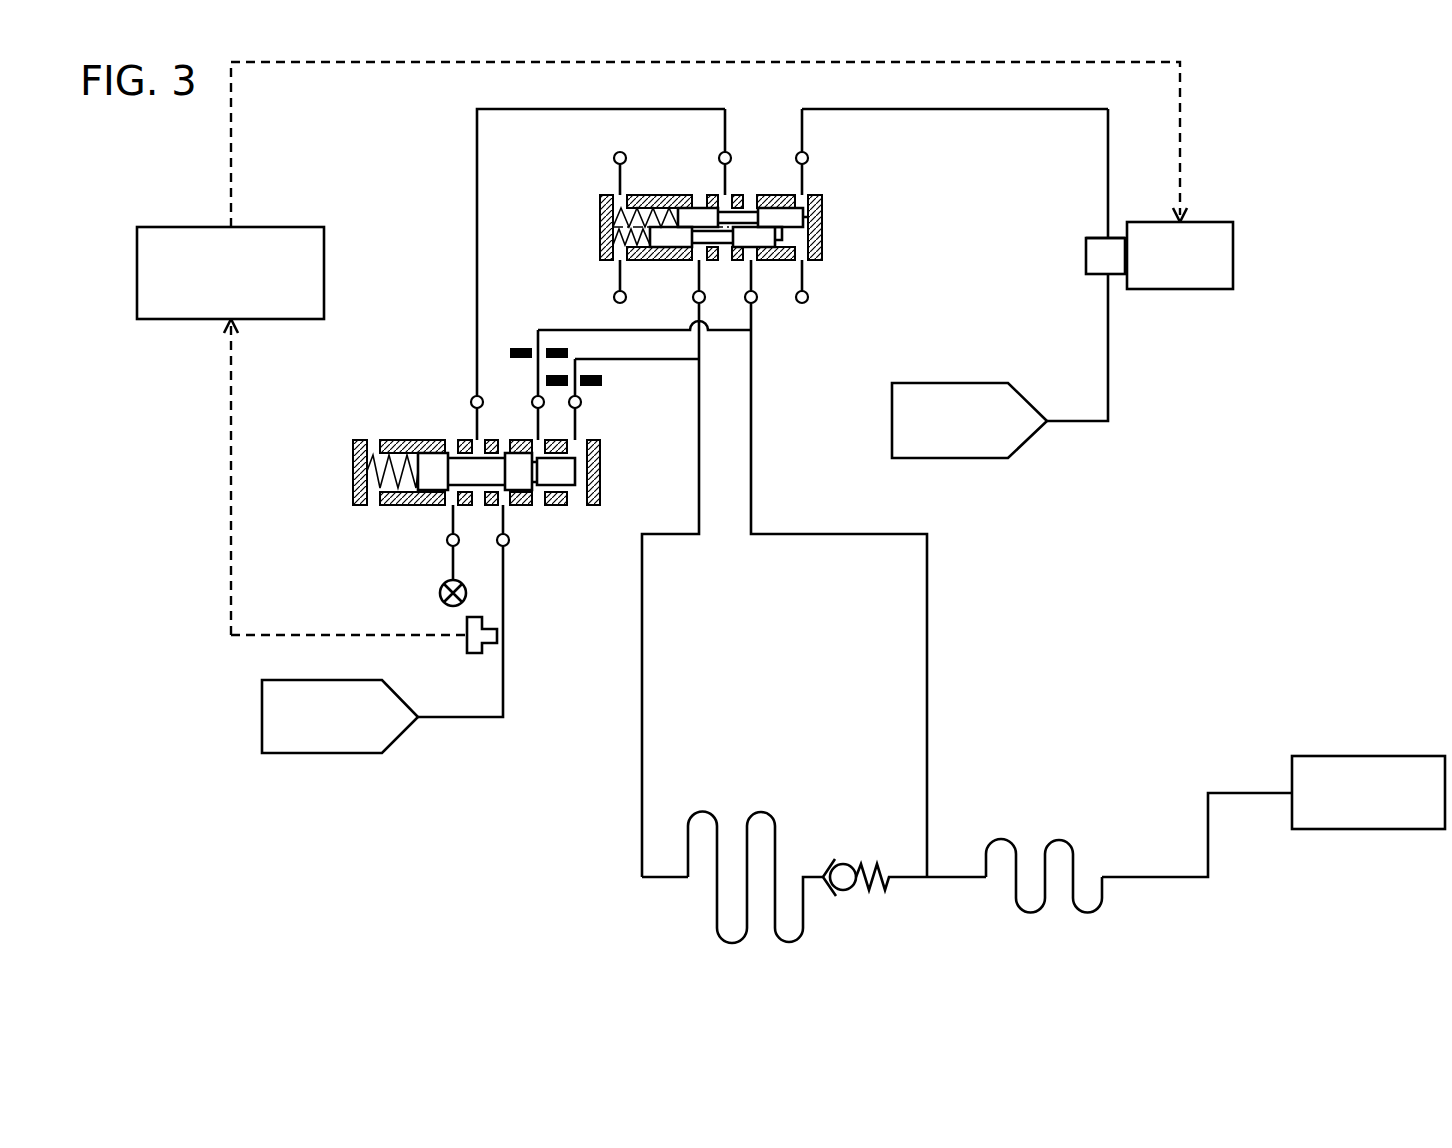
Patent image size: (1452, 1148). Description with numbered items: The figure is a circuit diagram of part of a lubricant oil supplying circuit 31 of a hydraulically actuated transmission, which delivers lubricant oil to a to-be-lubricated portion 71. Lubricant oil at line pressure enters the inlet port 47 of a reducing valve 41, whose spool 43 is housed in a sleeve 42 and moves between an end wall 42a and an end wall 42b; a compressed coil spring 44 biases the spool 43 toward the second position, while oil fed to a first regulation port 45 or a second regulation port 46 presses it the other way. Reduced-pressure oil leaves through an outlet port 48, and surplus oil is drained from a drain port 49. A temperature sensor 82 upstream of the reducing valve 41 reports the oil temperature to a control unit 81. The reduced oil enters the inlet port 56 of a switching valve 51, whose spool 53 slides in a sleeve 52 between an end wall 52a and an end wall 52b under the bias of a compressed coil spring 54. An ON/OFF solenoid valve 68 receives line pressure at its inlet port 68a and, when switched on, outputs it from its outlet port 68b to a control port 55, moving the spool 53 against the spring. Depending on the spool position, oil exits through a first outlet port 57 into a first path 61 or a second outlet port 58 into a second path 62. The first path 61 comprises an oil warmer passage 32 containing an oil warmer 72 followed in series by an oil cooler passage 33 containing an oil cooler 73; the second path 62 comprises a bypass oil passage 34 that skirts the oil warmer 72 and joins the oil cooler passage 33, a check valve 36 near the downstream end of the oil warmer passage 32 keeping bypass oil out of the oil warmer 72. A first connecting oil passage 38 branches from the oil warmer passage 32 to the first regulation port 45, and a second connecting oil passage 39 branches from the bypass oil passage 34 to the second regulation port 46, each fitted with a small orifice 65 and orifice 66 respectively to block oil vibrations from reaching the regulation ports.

The lubricant oil supplying circuit 31 is at (446, 164).
The oil warmer passage 32 is at (642, 777).
The oil cooler passage 33 is at (1155, 880).
The bypass oil passage 34 is at (928, 680).
The check valve 36 is at (836, 864).
The first connecting oil passage 38 is at (673, 360).
The second connecting oil passage 39 is at (575, 328).
The reducing valve 41 is at (467, 541).
The sleeve 42 is at (415, 440).
The end wall 42a is at (353, 472).
The end wall 42b is at (600, 470).
The spool 43 is at (436, 485).
The compressed coil spring 44 is at (375, 490).
The first regulation port 45 is at (582, 403).
The second regulation port 46 is at (535, 396).
The inlet port 47 is at (510, 540).
The outlet port 48 is at (475, 396).
The drain port 49 is at (458, 543).
The switching valve 51 is at (815, 214).
The sleeve 52 is at (665, 195).
The end wall 52a is at (600, 232).
The end wall 52b is at (822, 237).
The spool 53 is at (782, 217).
The compressed coil spring 54 is at (632, 195).
The control port 55 is at (807, 155).
The inlet port 56 is at (725, 152).
The first outlet port 57 is at (693, 300).
The second outlet port 58 is at (757, 300).
The first path 61 is at (630, 674).
The second path 62 is at (940, 614).
The orifice 65 is at (602, 380).
The orifice 66 is at (520, 348).
The ON/OFF solenoid valve 68 is at (1062, 283).
The inlet port 68a is at (1107, 276).
The outlet port 68b is at (1105, 238).
The to-be-lubricated portion 71 is at (1398, 757).
The oil warmer 72 is at (702, 812).
The oil cooler 73 is at (1000, 840).
The control unit 81 is at (283, 227).
The temperature sensor 82 is at (475, 653).